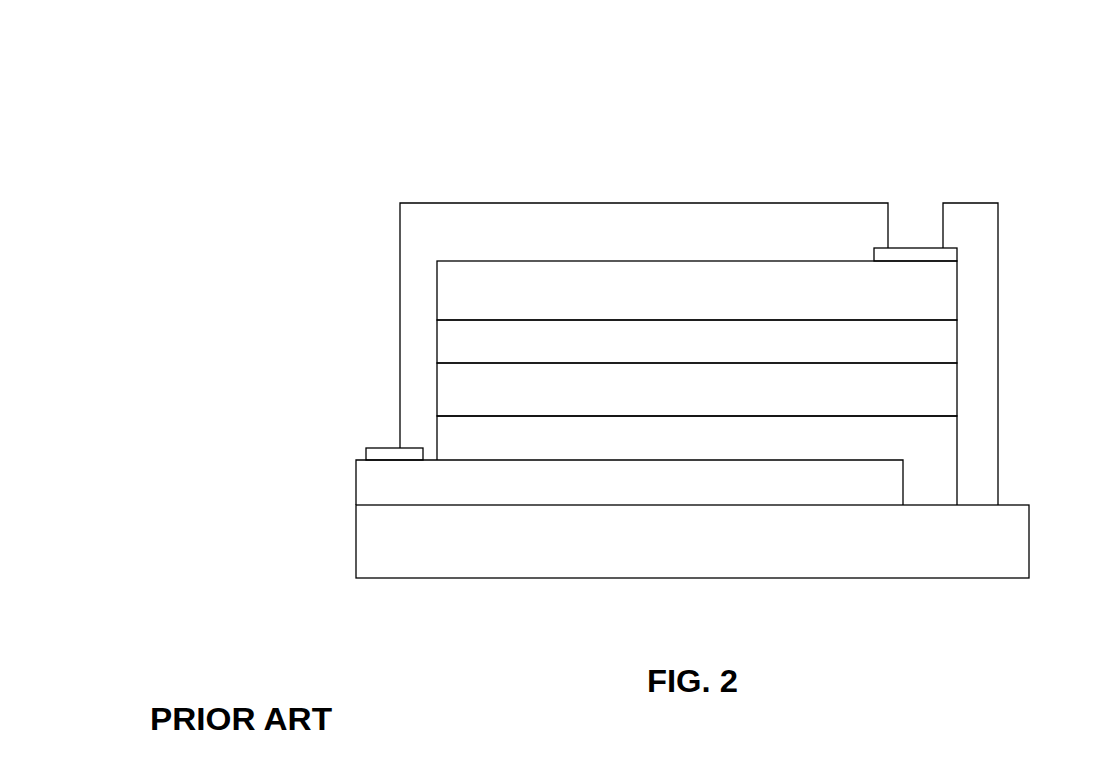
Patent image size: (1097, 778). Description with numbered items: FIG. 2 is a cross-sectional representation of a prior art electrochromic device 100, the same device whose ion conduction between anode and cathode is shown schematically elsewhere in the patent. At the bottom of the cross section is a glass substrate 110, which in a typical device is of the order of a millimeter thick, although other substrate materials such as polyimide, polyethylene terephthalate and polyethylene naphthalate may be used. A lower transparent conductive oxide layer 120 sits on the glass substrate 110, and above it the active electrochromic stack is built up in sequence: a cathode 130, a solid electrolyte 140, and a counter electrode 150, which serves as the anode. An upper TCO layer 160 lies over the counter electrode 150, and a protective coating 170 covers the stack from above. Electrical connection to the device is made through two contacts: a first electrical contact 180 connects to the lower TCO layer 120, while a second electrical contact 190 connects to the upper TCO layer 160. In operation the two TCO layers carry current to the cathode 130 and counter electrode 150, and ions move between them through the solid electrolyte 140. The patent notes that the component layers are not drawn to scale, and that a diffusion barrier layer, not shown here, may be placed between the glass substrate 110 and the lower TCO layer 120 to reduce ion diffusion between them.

The electrochromic device 100 is at (382, 107).
The glass substrate 110 is at (378, 535).
The lower transparent conductive oxide (TCO) layer 120 is at (382, 480).
The cathode 130 is at (927, 470).
The solid electrolyte 140 is at (900, 392).
The counter electrode (anode) 150 is at (470, 340).
The upper TCO layer 160 is at (938, 292).
The protective coating 170 is at (660, 215).
The first electrical contact 180 is at (395, 453).
The second electrical contact 190 is at (905, 253).